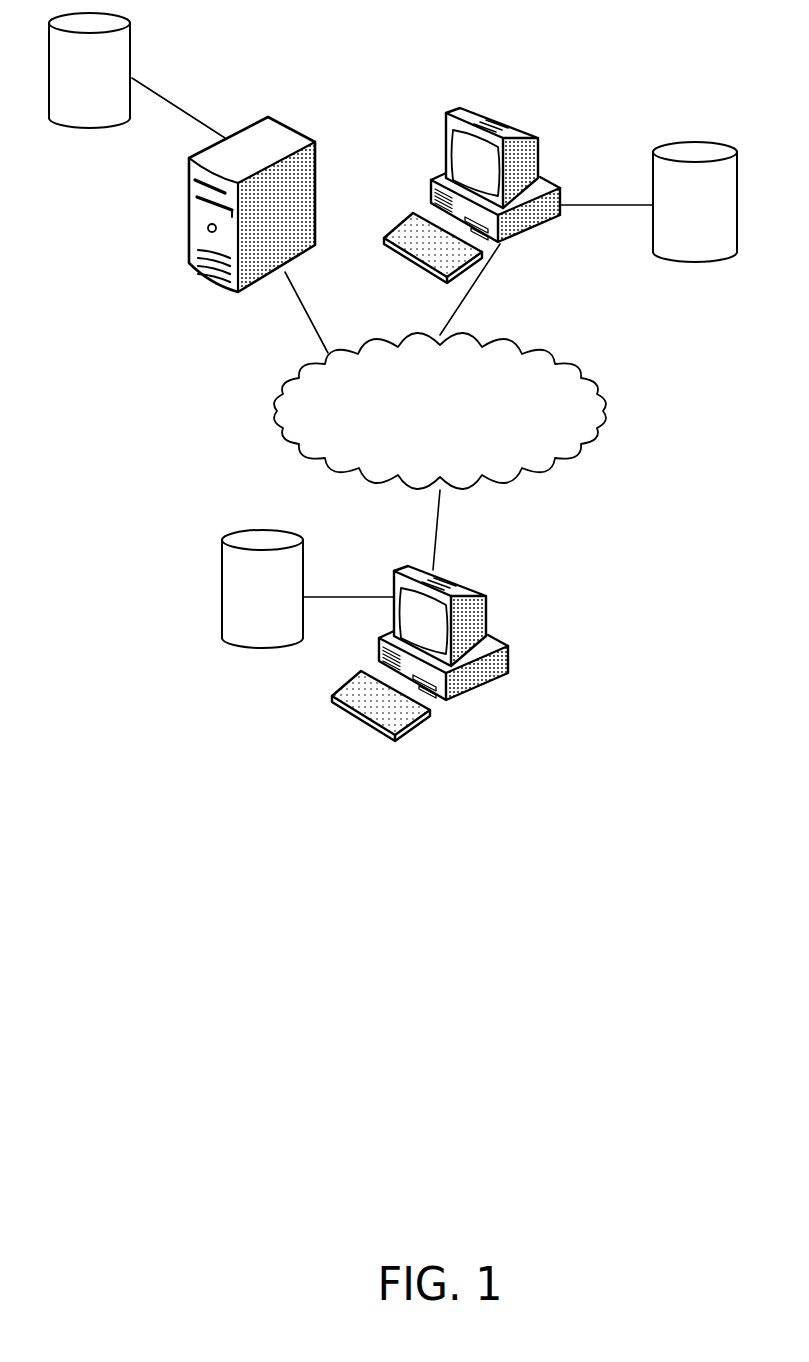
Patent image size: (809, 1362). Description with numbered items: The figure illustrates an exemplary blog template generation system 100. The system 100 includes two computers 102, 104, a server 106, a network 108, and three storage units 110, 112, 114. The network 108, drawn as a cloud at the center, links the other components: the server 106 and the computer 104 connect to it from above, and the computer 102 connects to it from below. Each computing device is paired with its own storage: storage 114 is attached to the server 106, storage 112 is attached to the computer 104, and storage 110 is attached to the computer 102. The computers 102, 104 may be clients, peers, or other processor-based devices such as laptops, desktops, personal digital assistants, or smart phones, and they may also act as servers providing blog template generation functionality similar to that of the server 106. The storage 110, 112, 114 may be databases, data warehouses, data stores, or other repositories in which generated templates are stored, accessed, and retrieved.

The system 100 is at (100, 985).
The computer 102 is at (449, 577).
The computer 104 is at (530, 131).
The server 106 is at (287, 124).
The network 108 is at (416, 457).
The storage 110 is at (237, 606).
The storage 112 is at (670, 217).
The storage 114 is at (64, 87).